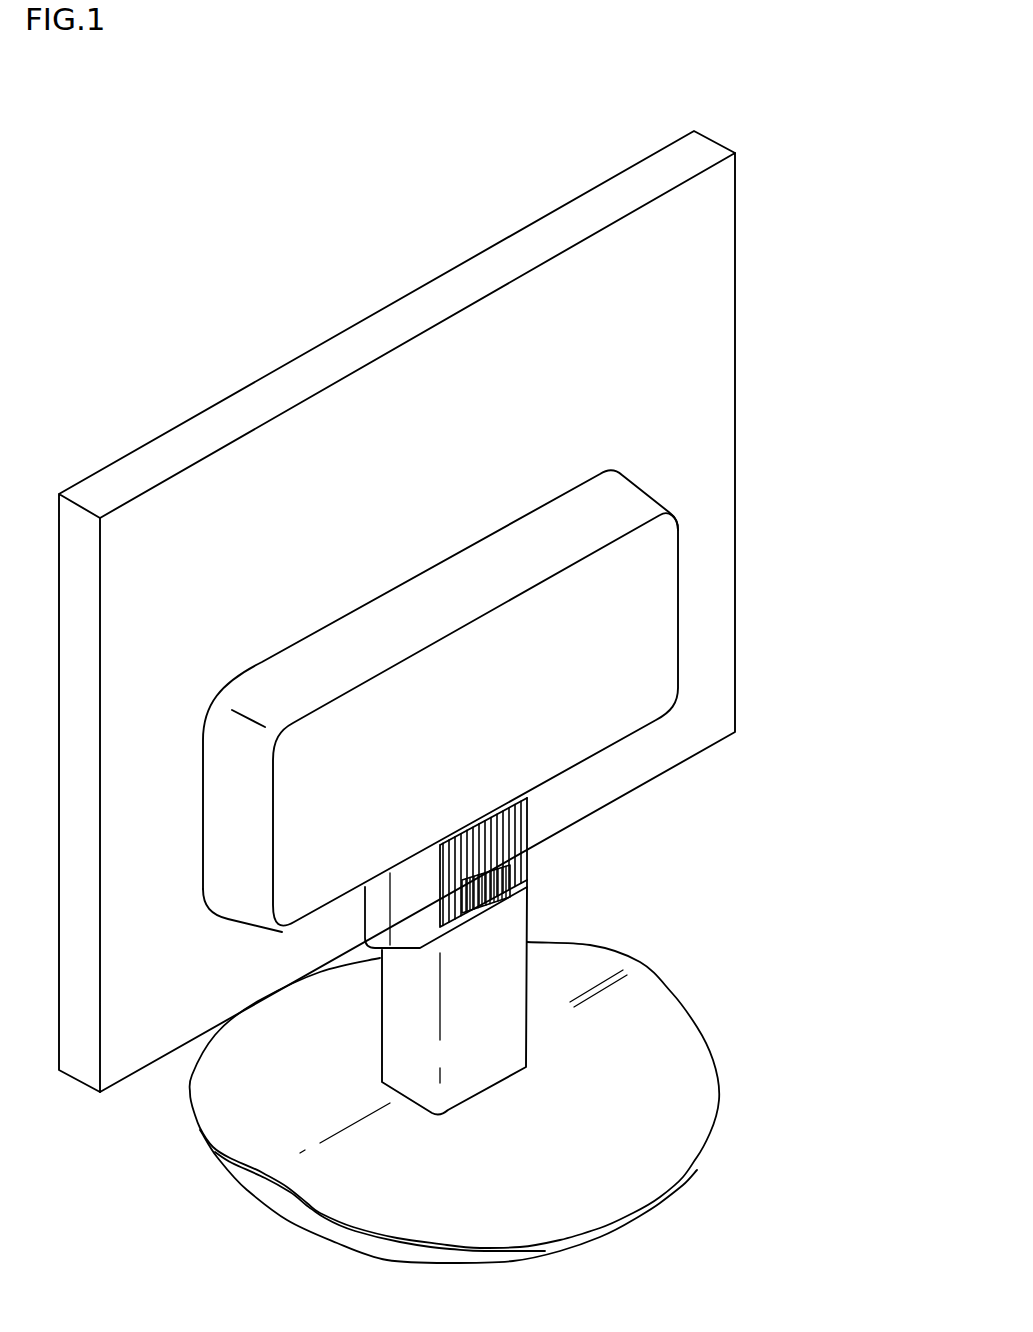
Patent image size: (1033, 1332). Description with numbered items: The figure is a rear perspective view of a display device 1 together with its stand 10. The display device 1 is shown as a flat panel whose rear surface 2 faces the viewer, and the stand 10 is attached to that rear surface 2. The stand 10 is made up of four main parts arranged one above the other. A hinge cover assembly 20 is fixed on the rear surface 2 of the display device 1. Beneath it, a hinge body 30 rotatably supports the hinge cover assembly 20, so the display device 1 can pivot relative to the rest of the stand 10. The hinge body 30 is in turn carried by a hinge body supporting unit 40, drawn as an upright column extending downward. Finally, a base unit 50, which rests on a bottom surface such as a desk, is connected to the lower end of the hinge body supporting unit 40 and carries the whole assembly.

The display device 1 is at (787, 193).
The rear surface 2 is at (708, 317).
The stand 10 is at (690, 922).
The hinge cover assembly 20 is at (522, 823).
The hinge body 30 is at (498, 908).
The hinge body supporting unit 40 is at (507, 1000).
The base unit 50 is at (695, 1079).